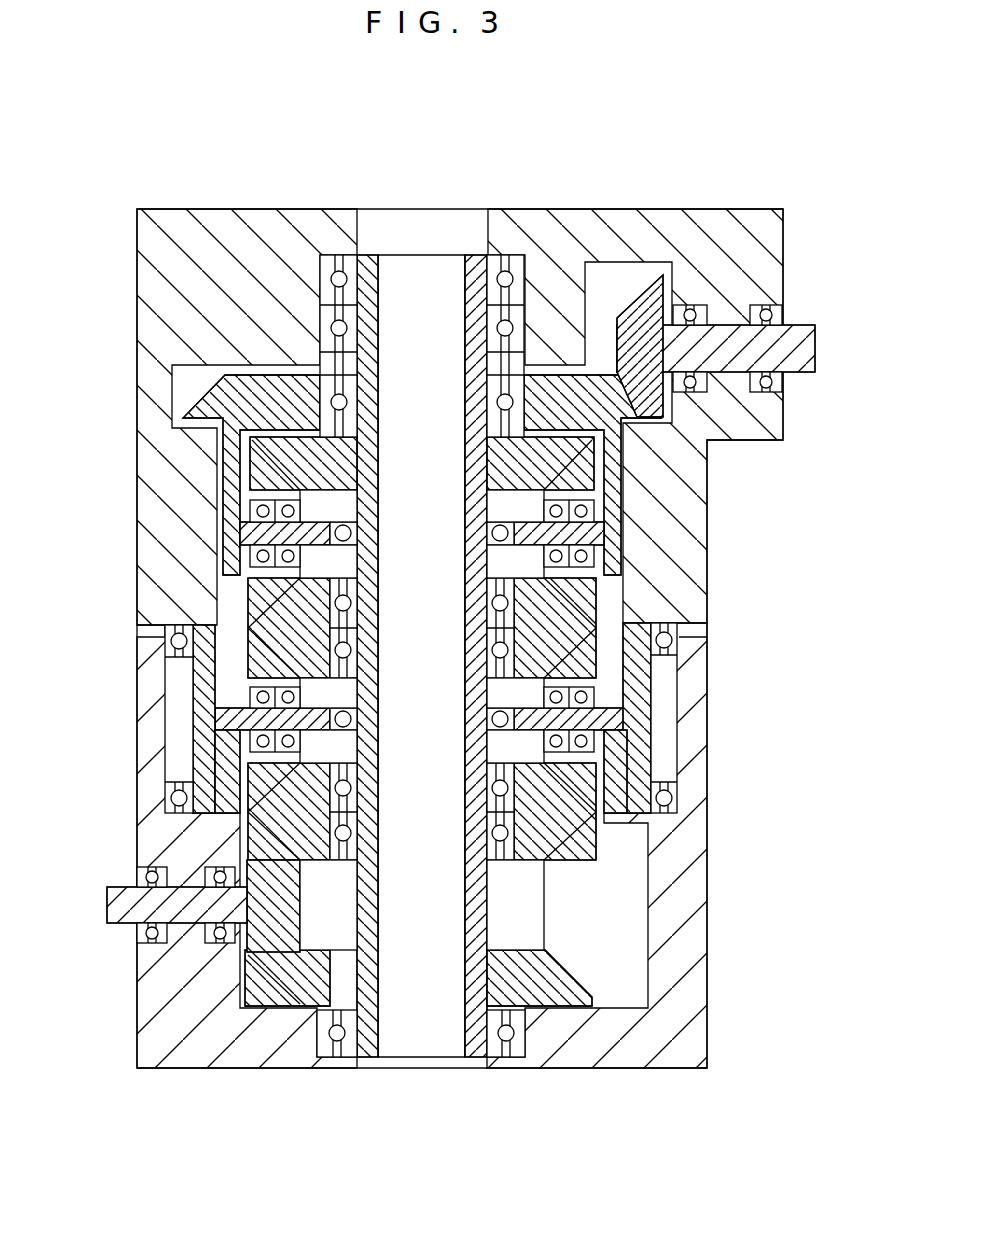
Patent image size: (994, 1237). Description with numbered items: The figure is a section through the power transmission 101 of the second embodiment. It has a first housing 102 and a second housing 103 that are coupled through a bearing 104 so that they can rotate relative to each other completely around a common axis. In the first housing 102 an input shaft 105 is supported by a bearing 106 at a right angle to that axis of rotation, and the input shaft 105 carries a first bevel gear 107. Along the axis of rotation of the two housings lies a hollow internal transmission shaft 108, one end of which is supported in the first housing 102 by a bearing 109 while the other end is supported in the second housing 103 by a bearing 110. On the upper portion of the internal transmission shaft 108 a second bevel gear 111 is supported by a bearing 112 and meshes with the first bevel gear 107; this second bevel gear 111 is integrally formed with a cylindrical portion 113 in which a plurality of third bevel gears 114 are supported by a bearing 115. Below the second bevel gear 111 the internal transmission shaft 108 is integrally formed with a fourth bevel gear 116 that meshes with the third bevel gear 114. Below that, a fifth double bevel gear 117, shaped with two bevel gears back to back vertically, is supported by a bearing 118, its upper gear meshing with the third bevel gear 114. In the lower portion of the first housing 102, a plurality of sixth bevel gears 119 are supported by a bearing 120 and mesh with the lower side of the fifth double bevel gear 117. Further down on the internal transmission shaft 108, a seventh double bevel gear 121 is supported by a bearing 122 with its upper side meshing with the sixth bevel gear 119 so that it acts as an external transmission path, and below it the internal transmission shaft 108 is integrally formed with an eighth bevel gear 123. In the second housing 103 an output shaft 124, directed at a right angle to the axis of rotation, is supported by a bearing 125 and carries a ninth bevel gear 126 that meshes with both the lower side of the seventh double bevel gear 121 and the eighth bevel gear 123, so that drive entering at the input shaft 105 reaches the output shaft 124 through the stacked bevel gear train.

The power transmission 101 is at (305, 197).
The first housing 102 is at (770, 210).
The second housing 103 is at (697, 877).
The bearing 104 is at (660, 780).
The input shaft 105 is at (803, 327).
The bearing 106 is at (768, 392).
The first bevel gear 107 is at (657, 310).
The internal transmission shaft 108 is at (385, 218).
The bearing 109 is at (495, 262).
The bearing 110 is at (512, 1050).
The second bevel gear 111 is at (592, 395).
The bearing 112 is at (533, 388).
The cylindrical portion 113 is at (612, 462).
The third bevel gear 114 is at (590, 495).
The bearing 115 is at (617, 577).
The fourth bevel gear 116 is at (540, 490).
The fifth double bevel gear 117 is at (530, 567).
The bearing 118 is at (490, 618).
The sixth bevel gear 119 is at (543, 685).
The bearing 120 is at (540, 732).
The seventh double bevel gear 121 is at (560, 822).
The bearing 122 is at (515, 857).
The eighth bevel gear 123 is at (530, 958).
The output shaft 124 is at (120, 897).
The bearing 125 is at (133, 933).
The ninth bevel gear 126 is at (297, 880).